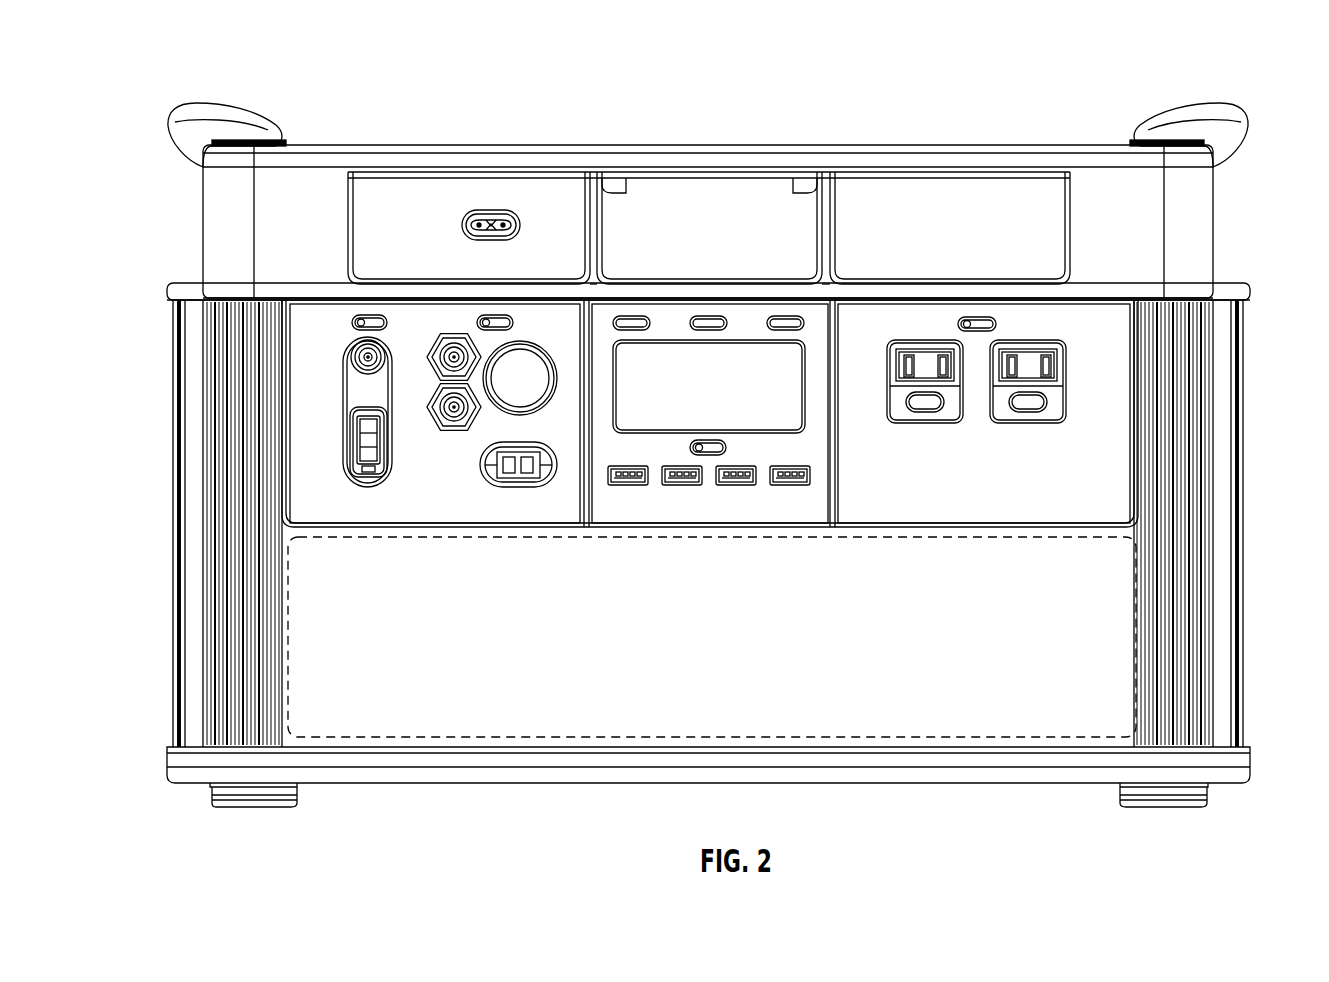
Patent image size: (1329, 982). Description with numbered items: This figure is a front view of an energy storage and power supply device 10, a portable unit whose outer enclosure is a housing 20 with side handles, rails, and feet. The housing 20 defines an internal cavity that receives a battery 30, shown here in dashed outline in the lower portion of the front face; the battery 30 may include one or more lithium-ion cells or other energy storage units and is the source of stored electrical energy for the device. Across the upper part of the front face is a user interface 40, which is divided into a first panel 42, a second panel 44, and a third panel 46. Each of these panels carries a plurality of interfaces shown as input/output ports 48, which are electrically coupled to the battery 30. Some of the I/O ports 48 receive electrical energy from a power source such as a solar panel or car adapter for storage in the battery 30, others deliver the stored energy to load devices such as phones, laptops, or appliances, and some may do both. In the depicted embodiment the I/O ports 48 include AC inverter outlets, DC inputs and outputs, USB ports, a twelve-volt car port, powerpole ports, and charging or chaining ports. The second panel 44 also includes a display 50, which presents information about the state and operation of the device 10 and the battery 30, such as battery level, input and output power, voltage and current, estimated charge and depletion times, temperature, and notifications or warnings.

The energy storage and power supply device 10 is at (1266, 75).
The housing 20 is at (172, 672).
The battery 30 is at (998, 740).
The user interface 40 is at (1152, 418).
The first panel 42 is at (945, 515).
The second panel 44 is at (600, 510).
The third panel 46 is at (363, 510).
The input/output (I/O) ports 48 is at (343, 403).
The display 50 is at (805, 410).